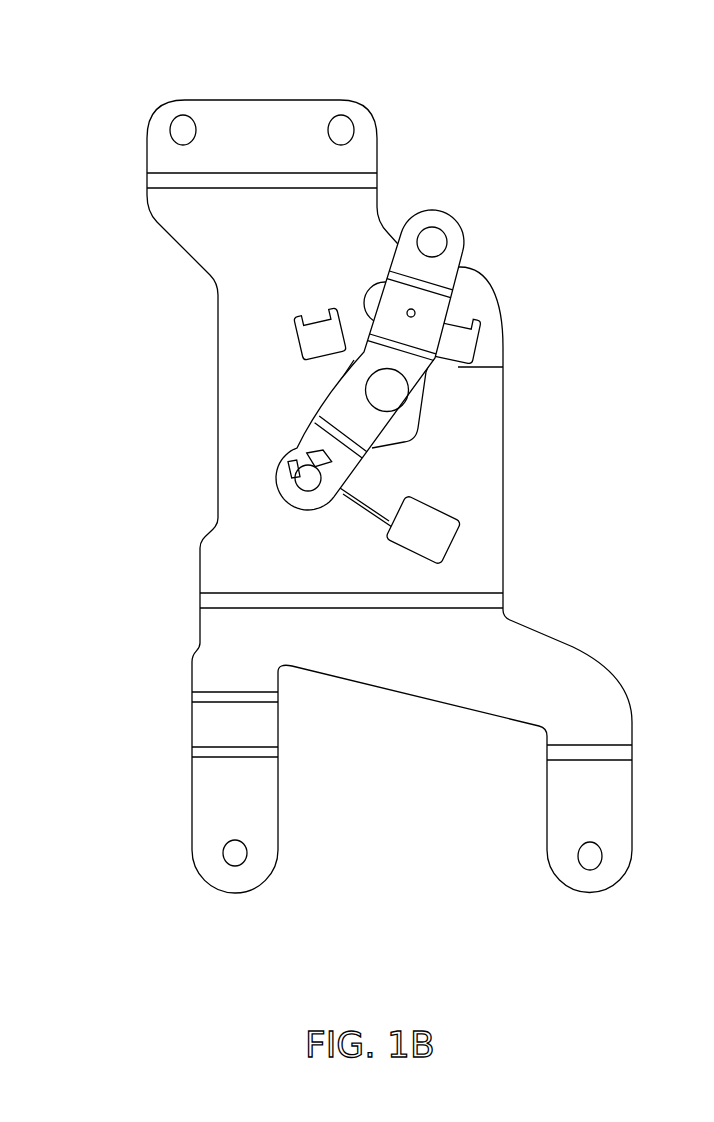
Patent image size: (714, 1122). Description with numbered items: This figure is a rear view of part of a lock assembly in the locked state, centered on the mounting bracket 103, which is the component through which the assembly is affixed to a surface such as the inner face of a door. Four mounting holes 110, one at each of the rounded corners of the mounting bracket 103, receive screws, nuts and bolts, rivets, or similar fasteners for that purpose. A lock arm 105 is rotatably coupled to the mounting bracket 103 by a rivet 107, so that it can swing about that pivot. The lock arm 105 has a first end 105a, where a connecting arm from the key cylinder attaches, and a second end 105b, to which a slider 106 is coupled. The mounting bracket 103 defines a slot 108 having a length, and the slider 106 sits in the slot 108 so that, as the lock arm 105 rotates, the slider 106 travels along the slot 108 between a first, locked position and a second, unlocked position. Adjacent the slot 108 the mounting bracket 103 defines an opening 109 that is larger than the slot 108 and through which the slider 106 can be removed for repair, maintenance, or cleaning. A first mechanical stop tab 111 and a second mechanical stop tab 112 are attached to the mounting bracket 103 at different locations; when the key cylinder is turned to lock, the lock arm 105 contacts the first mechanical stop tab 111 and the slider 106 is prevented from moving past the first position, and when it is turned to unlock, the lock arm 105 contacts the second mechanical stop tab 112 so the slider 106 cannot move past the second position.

The mounting bracket 103 is at (147, 157).
The lock arm 105 is at (330, 400).
The first end 105a is at (447, 241).
The second end 105b is at (305, 443).
The slider 106 is at (277, 477).
The rivet 107 is at (406, 382).
The slot 108 is at (372, 492).
The opening 109 is at (450, 552).
The mounting holes 110 is at (180, 120).
The first mechanical stop tab 111 is at (478, 320).
The second mechanical stop tab 112 is at (302, 316).